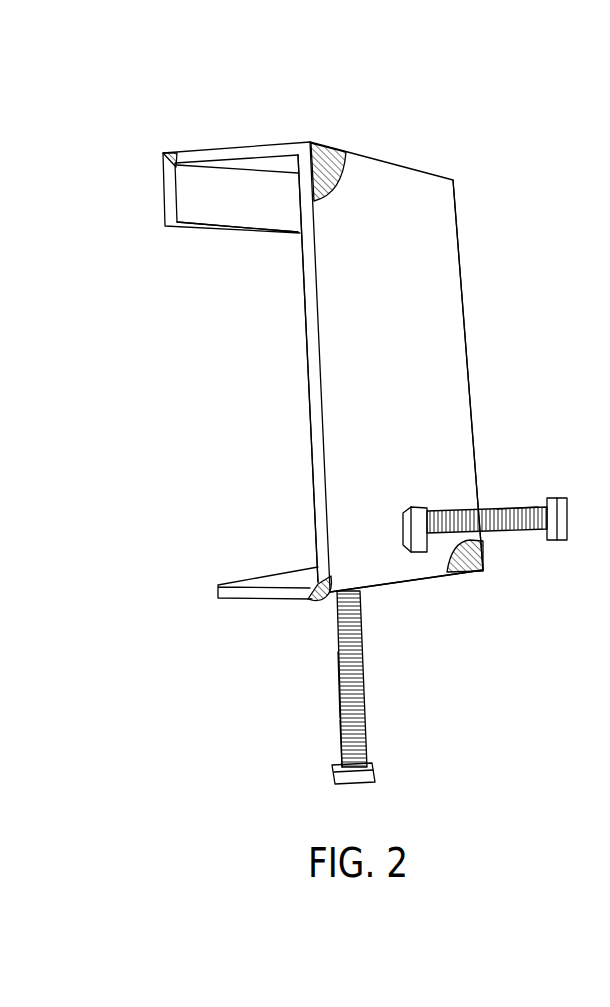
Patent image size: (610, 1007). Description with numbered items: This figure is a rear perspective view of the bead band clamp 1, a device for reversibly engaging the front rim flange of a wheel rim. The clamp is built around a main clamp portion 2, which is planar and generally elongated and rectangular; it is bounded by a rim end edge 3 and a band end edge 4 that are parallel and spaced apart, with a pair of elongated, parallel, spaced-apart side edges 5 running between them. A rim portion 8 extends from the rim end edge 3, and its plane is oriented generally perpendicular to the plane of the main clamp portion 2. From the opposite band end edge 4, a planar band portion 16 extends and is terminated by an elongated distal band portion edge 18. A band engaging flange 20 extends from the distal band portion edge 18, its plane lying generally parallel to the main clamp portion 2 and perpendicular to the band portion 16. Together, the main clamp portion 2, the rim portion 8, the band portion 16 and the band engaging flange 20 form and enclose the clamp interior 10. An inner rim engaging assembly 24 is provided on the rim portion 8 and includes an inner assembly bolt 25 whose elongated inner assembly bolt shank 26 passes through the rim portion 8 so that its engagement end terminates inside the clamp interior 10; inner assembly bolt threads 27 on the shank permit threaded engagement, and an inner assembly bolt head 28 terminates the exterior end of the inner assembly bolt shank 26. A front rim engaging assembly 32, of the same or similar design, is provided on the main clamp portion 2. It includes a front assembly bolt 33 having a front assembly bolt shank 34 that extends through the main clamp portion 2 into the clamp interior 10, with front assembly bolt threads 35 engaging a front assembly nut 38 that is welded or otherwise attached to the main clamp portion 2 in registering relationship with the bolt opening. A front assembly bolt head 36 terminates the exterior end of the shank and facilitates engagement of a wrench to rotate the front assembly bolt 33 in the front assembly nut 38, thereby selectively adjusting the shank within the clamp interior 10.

The bead band clamp 1 is at (82, 62).
The main clamp portion 2 is at (484, 356).
The rim end edge 3 is at (405, 592).
The band end edge 4 is at (391, 163).
The side edges 5 is at (458, 225).
The rim portion 8 is at (252, 603).
The clamp interior 10 is at (258, 401).
The band portion 16 is at (242, 146).
The distal band portion edge 18 is at (160, 153).
The band engaging flange 20 is at (202, 190).
The inner rim engaging assembly 24 is at (323, 634).
The inner assembly bolt 25 is at (382, 708).
The inner assembly bolt shank 26 is at (338, 723).
The inner assembly bolt threads 27 is at (338, 652).
The inner assembly bolt head 28 is at (332, 772).
The front rim engaging assembly 32 is at (496, 448).
The front assembly bolt 33 is at (521, 543).
The front assembly bolt shank 34 is at (468, 510).
The front assembly bolt threads 35 is at (538, 507).
The front assembly bolt head 36 is at (553, 542).
The front assembly nut 38 is at (408, 510).